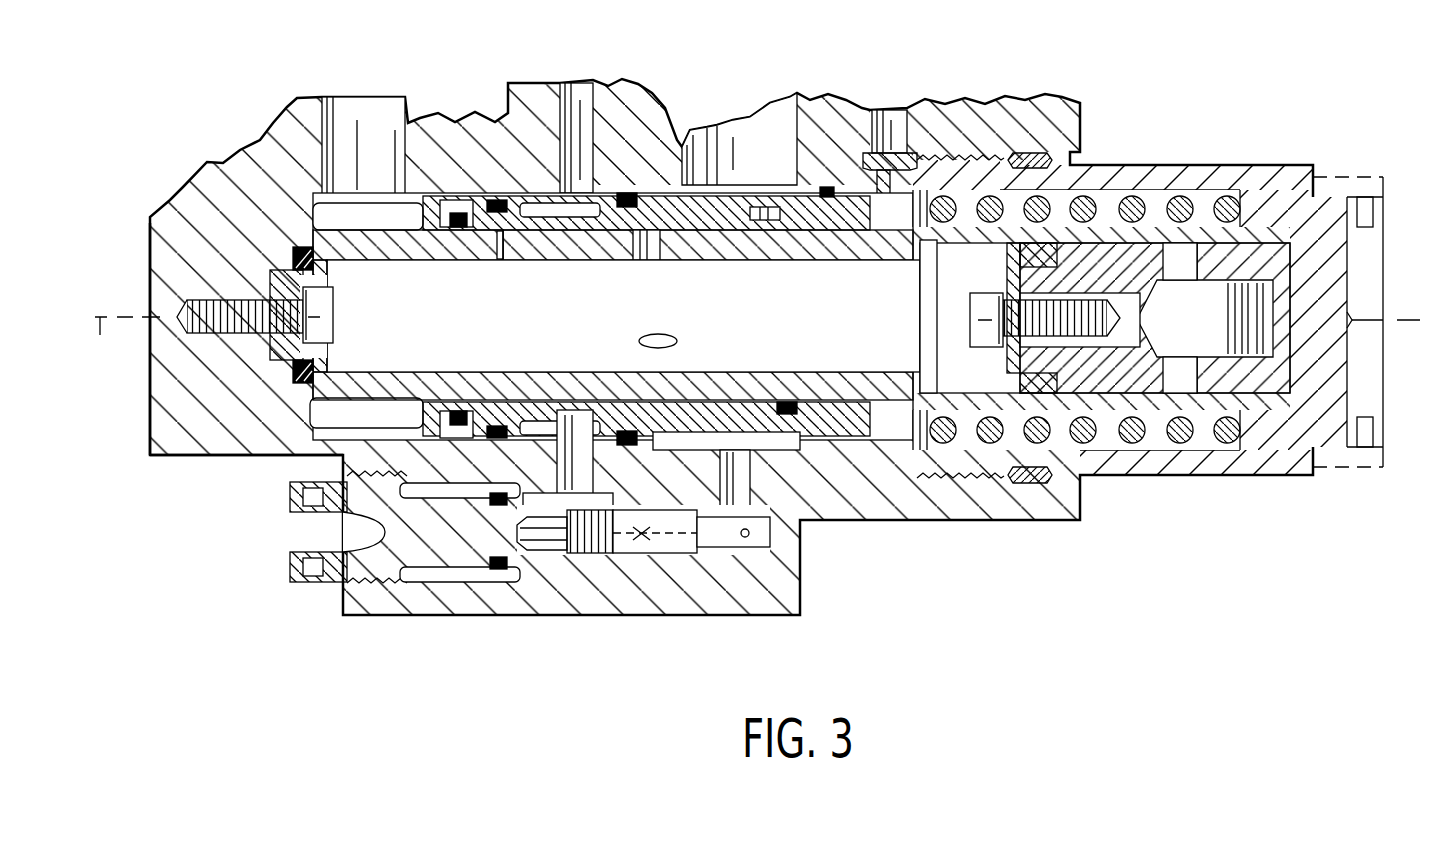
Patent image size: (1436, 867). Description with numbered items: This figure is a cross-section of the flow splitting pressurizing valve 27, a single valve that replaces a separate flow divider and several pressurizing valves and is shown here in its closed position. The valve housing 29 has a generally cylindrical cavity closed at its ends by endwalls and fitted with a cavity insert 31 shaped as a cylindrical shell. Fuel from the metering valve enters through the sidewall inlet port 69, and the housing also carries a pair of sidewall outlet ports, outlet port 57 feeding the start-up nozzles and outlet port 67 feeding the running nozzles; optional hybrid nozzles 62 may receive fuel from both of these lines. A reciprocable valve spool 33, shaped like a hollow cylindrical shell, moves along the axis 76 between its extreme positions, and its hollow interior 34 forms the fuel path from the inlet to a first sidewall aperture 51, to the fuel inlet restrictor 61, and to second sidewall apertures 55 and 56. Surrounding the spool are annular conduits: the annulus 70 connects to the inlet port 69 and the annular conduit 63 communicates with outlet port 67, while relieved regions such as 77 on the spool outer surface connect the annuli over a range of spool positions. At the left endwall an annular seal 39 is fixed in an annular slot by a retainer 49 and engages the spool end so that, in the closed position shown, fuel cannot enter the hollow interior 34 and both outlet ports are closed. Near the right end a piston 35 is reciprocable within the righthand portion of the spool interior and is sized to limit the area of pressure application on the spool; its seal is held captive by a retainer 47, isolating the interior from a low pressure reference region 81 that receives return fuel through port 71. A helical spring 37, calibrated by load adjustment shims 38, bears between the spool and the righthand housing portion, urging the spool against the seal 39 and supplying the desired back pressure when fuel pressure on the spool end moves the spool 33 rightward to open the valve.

The flow splitting pressurizing valve 27 is at (903, 560).
The valve housing 29 is at (290, 138).
The cavity insert 31 is at (722, 412).
The valve spool 33 is at (647, 380).
The hollow interior 34 is at (657, 316).
The piston 35 is at (1140, 277).
The helical spring 37 is at (1085, 200).
The load adjustment shims 38 is at (925, 190).
The annular seal 39 is at (293, 253).
The retainer 47 is at (1012, 253).
The retainer 49 is at (320, 353).
The first sidewall aperture 51 is at (500, 263).
The second sidewall aperture 55 is at (660, 243).
The second sidewall aperture 56 is at (680, 337).
The outlet port 57 is at (575, 100).
The fuel inlet restrictor 61 is at (657, 537).
The hybrid nozzles 62 is at (340, 567).
The annular conduit 63 is at (787, 405).
The outlet port 67 is at (730, 137).
The inlet port 69 is at (357, 130).
The annular conduit 70 is at (340, 413).
The port 71 is at (893, 120).
The axis 76 is at (100, 335).
The relieved region 77 is at (500, 395).
The low pressure reference region 81 is at (1210, 337).